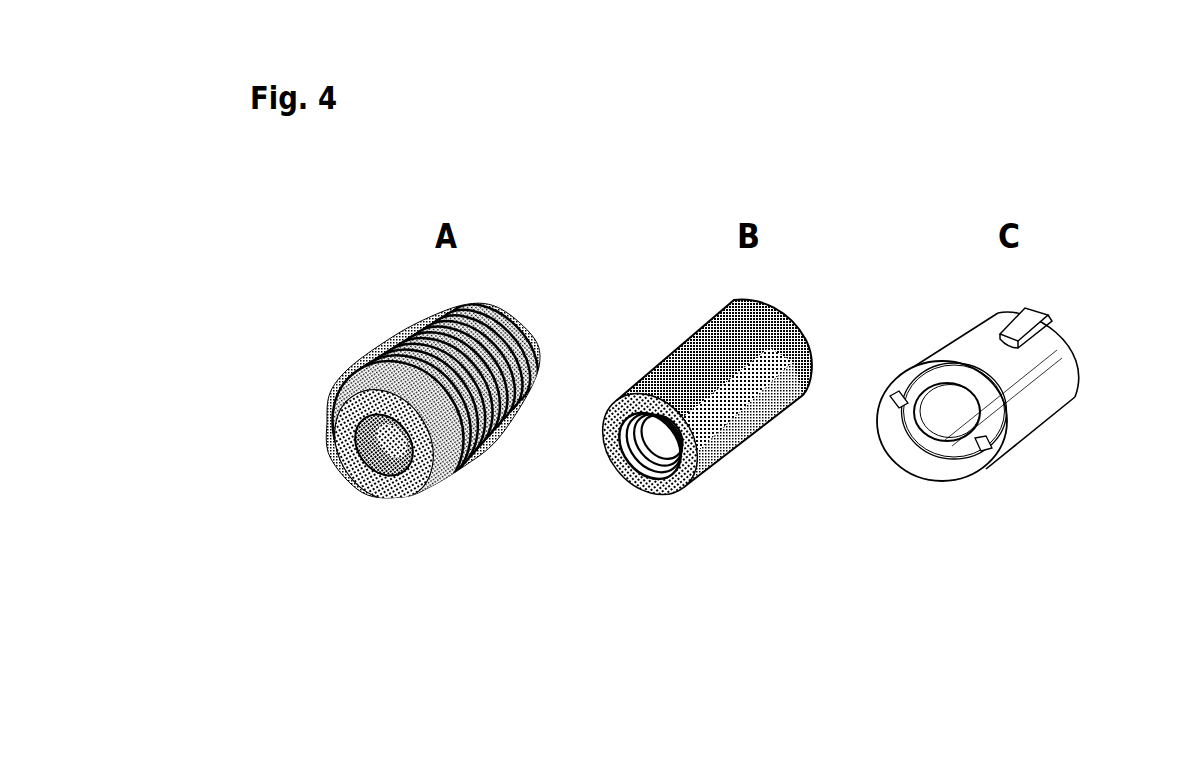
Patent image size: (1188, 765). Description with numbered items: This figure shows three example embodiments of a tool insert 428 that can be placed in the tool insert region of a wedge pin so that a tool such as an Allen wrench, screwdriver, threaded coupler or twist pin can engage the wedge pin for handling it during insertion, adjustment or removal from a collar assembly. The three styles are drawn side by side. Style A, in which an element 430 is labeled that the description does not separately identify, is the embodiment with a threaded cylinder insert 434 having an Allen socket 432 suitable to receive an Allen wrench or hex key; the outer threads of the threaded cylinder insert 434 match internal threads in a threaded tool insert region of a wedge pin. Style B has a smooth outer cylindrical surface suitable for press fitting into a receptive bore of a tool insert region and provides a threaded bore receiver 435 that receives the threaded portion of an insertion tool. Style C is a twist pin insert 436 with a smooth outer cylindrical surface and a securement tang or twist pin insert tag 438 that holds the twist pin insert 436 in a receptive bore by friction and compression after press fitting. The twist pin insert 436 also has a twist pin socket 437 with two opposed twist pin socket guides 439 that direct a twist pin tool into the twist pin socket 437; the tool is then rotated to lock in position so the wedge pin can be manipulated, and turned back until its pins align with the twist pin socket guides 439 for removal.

The tool insert 428 is at (623, 174).
The threaded insert 430 is at (367, 367).
The Allen socket 432 is at (365, 465).
The threaded cylinder insert 434 is at (698, 381).
The threaded bore receiver 435 is at (636, 466).
The twist pin insert 436 is at (980, 360).
The twist pin socket 437 is at (938, 424).
The twist pin insert tag 438 is at (1027, 328).
The twist pin socket guides 439 is at (992, 447).